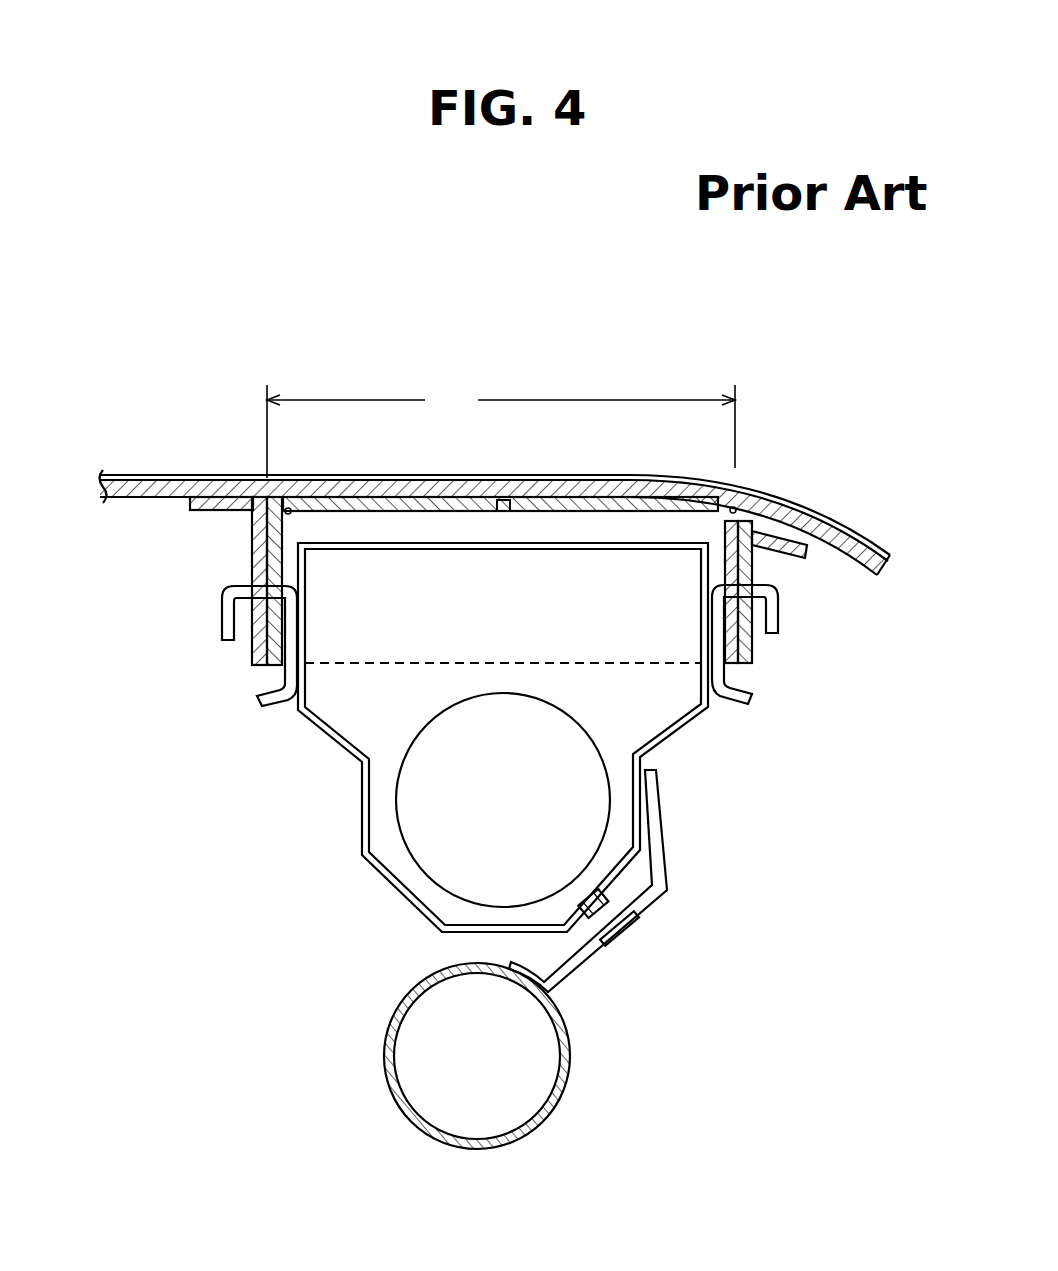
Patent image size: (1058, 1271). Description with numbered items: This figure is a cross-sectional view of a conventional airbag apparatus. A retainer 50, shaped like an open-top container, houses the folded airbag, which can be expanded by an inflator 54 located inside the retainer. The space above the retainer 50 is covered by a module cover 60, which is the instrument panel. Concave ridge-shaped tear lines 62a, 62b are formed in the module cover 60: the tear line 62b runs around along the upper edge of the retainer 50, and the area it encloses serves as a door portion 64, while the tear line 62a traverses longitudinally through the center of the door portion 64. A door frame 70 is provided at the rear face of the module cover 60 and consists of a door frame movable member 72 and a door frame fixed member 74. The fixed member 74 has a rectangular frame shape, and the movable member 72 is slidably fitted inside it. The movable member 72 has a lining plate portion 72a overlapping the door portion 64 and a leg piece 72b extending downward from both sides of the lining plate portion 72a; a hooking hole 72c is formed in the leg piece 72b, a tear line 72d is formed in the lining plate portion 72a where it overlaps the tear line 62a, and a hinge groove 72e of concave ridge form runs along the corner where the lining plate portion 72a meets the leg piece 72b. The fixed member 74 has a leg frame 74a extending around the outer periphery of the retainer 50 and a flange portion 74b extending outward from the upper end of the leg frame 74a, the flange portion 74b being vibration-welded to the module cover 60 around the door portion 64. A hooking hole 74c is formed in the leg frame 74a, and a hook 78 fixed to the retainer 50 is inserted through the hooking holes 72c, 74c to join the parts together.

The retainer 50 is at (662, 773).
The inflator 54 is at (532, 699).
The module cover 60 is at (526, 505).
The tear line 62a is at (500, 490).
The tear line 62b is at (260, 488).
The door portion 64 is at (501, 431).
The door frame 70 is at (152, 663).
The door frame movable member 72 is at (428, 528).
The lining plate portion 72a is at (560, 505).
The leg piece 72b is at (305, 560).
The hooking hole 72c is at (284, 630).
The tear line 72d is at (503, 510).
The hinge groove 72e is at (289, 514).
The door frame fixed member 74 is at (241, 545).
The leg frame 74a is at (250, 562).
The flange portion 74b is at (207, 522).
The hooking hole 74c is at (238, 596).
The hook 78 is at (232, 642).